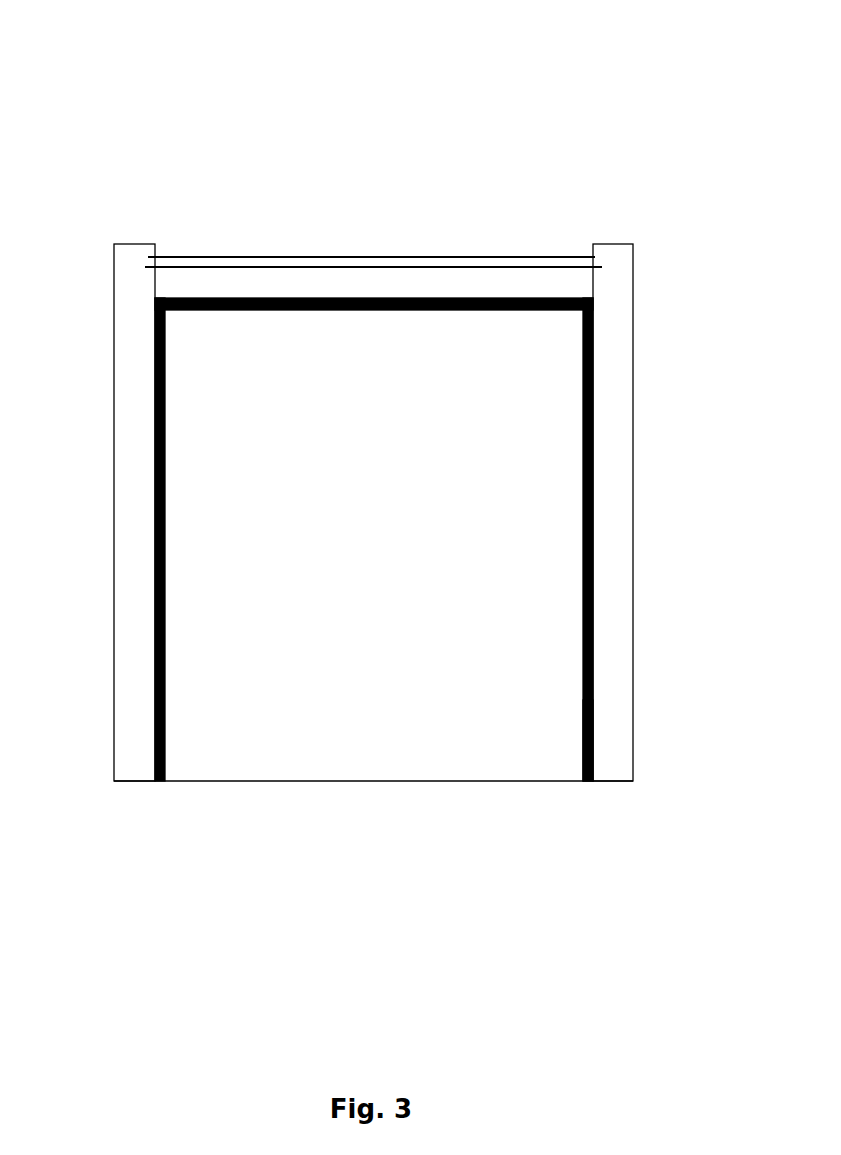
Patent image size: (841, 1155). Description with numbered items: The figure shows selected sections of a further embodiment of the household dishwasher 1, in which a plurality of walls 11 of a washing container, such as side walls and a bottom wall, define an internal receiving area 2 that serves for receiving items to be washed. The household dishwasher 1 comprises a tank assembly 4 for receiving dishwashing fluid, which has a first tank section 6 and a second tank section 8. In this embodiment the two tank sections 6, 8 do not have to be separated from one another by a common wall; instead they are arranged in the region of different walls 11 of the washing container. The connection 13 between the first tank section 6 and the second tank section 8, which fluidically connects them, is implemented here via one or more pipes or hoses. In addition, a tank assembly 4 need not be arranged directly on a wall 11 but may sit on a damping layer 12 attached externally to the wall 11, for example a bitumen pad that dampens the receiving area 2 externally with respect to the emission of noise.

The household dishwasher 1 is at (371, 470).
The receiving area 2 is at (276, 748).
The tank assembly 4 is at (122, 781).
The first tank section 6 is at (127, 257).
The second tank section 8 is at (622, 257).
The wall 11 is at (316, 310).
The damping layer 12 is at (585, 781).
The connection 13 is at (486, 256).